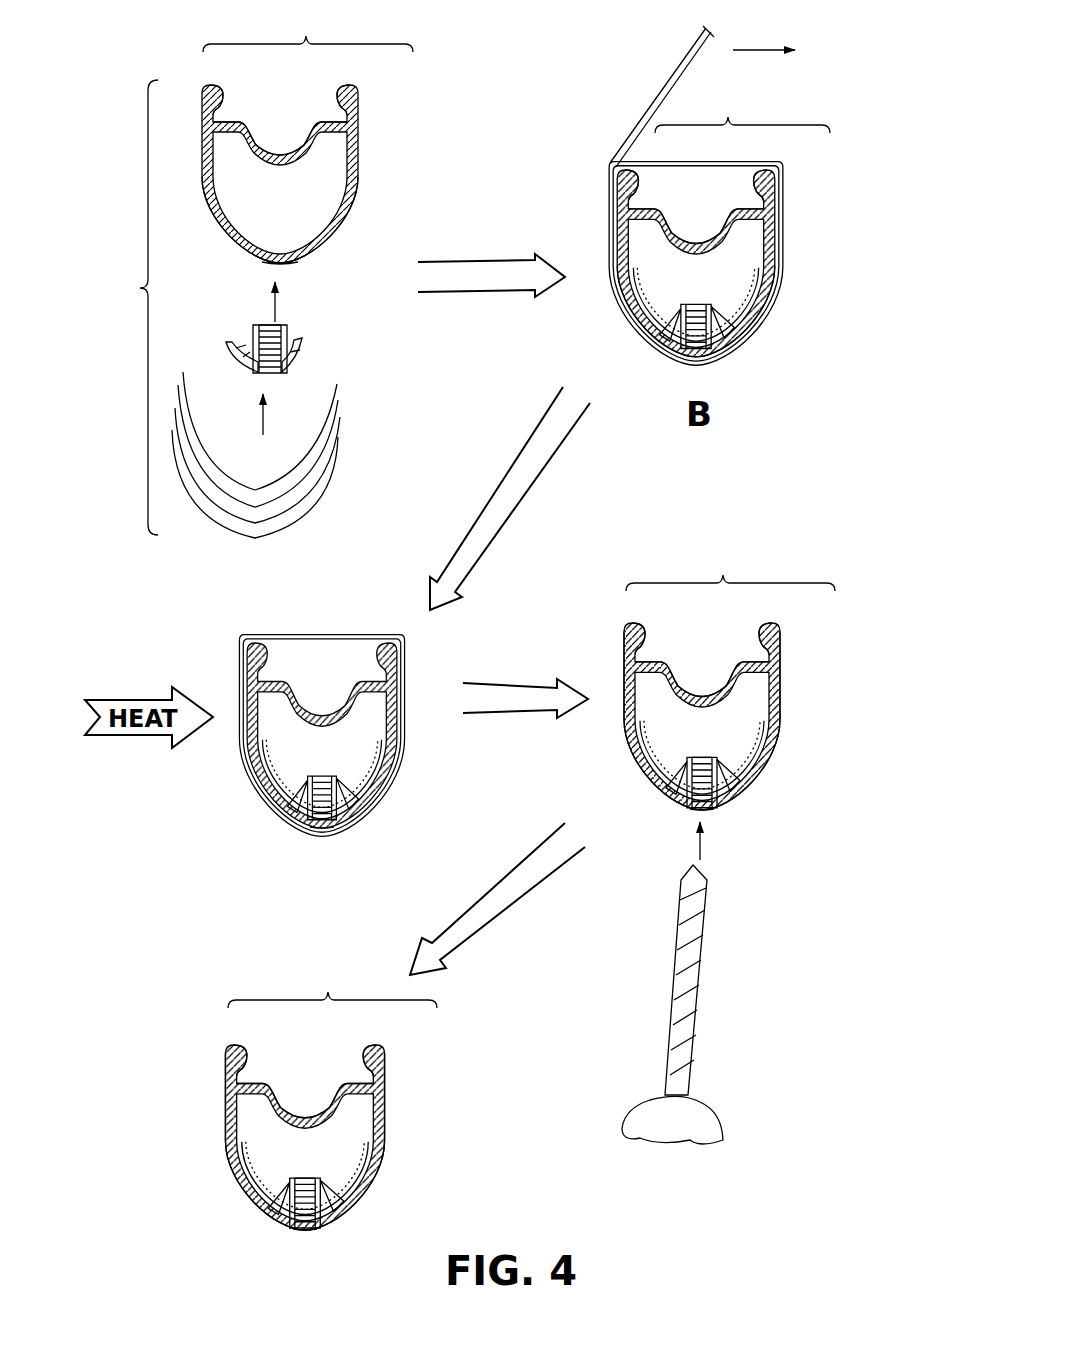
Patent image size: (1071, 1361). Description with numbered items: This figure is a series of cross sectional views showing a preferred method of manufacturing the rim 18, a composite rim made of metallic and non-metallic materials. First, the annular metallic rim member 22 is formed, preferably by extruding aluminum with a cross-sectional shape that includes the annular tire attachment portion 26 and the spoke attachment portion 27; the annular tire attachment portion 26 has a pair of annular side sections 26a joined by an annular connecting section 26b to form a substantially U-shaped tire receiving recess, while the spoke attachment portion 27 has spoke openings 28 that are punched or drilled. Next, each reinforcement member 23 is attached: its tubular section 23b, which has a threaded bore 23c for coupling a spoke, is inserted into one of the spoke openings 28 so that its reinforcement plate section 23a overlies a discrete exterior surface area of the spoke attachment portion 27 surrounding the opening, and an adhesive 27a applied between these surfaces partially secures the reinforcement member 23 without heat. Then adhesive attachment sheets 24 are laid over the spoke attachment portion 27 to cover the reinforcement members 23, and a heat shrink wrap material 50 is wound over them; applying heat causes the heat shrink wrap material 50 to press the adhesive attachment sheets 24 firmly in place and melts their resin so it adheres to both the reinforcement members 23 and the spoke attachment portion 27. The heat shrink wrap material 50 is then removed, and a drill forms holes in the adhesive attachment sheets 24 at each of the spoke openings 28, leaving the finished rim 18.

The rim 18 is at (475, 1040).
The annular metallic rim member 22 is at (378, 135).
The reinforcement member 23 is at (333, 332).
The reinforcement plate section 23a is at (305, 355).
The tubular section 23b is at (246, 350).
The threaded bore 23c is at (281, 324).
The adhesive attachment sheet 24 is at (346, 442).
The annular tire attachment portion 26 is at (519, 507).
The annular side section 26a is at (222, 110).
The annular connecting section 26b is at (255, 135).
The spoke attachment portion 27 is at (342, 207).
The adhesive 27a is at (240, 308).
The spoke opening 28 is at (286, 264).
The heat shrink wrap material 50 is at (690, 65).